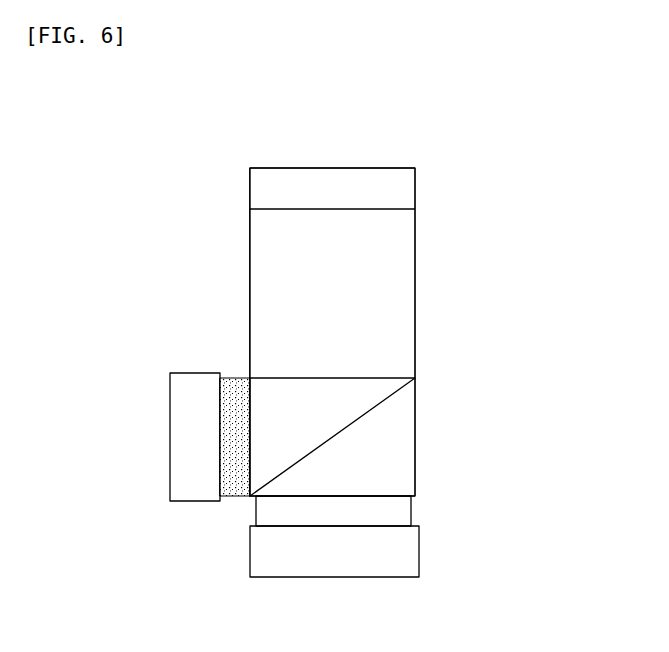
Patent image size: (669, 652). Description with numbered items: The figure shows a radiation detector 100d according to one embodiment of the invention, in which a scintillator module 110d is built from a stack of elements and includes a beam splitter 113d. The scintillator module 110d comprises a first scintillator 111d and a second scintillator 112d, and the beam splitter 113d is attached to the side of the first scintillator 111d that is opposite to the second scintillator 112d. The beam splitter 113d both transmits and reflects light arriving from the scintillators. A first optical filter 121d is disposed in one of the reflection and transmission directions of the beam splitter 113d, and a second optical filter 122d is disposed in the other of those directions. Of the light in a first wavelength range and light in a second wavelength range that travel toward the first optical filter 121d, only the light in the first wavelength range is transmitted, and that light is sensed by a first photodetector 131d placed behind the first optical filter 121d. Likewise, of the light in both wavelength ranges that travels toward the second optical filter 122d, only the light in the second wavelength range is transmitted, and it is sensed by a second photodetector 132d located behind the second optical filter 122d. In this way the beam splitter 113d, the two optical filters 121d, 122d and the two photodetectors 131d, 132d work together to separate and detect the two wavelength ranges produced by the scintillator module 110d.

The radiation detector 100d is at (463, 125).
The scintillator module 110d is at (517, 188).
The first scintillator 111d is at (402, 190).
The second scintillator 112d is at (402, 300).
The beam splitter 113d is at (402, 455).
The first optical filter 121d is at (234, 388).
The second optical filter 122d is at (405, 512).
The first photodetector 131d is at (178, 438).
The second photodetector 132d is at (337, 563).